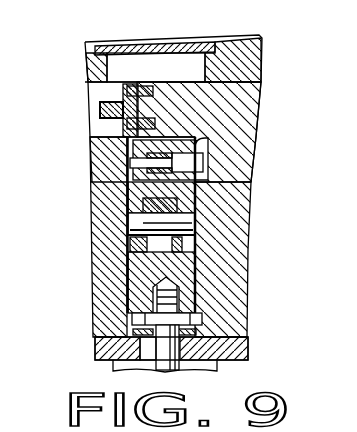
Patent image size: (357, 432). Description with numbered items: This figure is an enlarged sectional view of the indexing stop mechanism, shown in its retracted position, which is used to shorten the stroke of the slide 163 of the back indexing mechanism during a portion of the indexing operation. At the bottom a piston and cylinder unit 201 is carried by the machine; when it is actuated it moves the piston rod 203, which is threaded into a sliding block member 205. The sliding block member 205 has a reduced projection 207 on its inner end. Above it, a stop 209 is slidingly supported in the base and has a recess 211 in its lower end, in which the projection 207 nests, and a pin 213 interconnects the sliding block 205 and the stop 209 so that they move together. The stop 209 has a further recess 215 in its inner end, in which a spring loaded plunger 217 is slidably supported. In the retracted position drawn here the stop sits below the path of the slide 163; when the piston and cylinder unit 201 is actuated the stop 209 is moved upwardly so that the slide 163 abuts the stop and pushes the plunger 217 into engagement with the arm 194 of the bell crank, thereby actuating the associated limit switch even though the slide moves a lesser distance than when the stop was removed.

The slide 163 is at (246, 89).
The arm of bell crank 194 is at (100, 105).
The pin 213 is at (127, 236).
The recess 215 is at (161, 138).
The spring loaded plunger 217 is at (200, 136).
The stop 209 is at (203, 159).
The reduced projection 207 is at (243, 187).
The recess 211 is at (195, 218).
The sliding block member 205 is at (190, 267).
The piston rod 203 is at (170, 340).
The piston and cylinder unit 201 is at (220, 365).